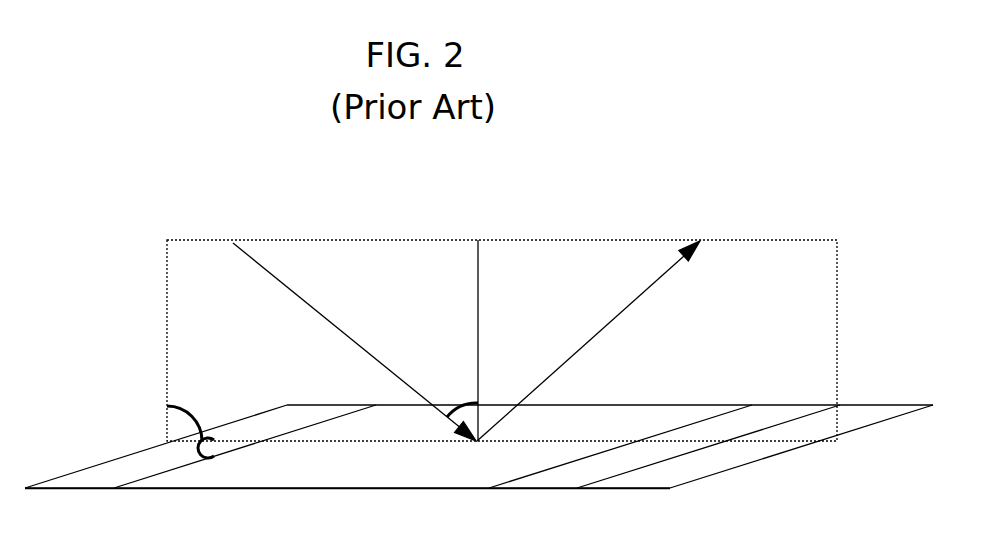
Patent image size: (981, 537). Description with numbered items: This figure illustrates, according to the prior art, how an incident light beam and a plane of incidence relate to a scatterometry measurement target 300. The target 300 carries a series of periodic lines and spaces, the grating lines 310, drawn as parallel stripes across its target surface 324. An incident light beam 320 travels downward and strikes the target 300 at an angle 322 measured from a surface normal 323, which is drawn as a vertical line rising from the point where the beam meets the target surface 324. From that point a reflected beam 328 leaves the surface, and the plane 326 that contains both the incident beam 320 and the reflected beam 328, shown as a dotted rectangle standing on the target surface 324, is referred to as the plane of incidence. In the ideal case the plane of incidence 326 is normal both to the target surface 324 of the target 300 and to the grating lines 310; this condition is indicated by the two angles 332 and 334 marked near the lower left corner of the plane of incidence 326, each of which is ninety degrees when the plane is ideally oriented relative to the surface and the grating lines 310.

The measurement target 300 is at (258, 488).
The grating lines 310 is at (310, 425).
The incident light beam 320 is at (325, 317).
The angle 322 is at (458, 402).
The surface normal 323 is at (478, 300).
The target surface 324 is at (479, 446).
The plane of incidence 326 is at (502, 340).
The reflected beam 328 is at (563, 362).
The angle 332 is at (188, 415).
The angle 334 is at (205, 448).